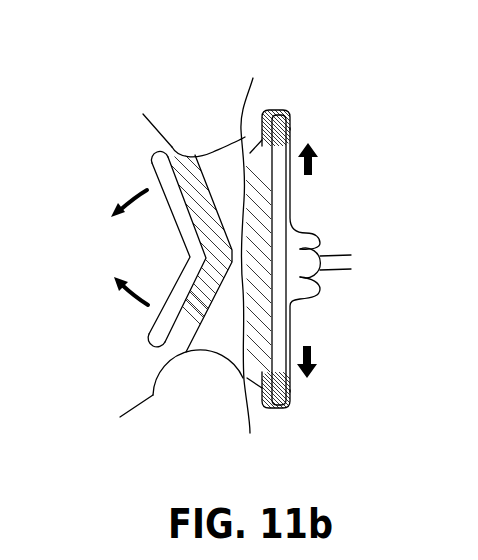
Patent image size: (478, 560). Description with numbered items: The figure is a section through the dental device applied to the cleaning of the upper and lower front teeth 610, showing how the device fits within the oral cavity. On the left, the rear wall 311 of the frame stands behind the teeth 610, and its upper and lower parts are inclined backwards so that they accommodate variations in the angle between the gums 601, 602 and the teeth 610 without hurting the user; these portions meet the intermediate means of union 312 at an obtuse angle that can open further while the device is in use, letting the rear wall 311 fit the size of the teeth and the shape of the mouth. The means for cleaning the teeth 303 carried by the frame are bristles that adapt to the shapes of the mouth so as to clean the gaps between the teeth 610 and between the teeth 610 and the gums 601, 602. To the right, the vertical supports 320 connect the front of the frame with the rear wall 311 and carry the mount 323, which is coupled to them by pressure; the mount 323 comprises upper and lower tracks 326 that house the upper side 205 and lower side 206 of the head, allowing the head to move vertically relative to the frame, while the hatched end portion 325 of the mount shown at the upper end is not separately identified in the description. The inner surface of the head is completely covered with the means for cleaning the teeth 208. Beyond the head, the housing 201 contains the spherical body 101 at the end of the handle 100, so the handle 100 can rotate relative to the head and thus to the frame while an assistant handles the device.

The handle 100 is at (351, 258).
The spherical body 101 is at (320, 272).
The housing 201 is at (308, 226).
The upper side of the head 205 is at (291, 133).
The lower side of the head 206 is at (290, 378).
The means for cleaning the teeth 208 is at (250, 77).
The means for cleaning the teeth 303 is at (172, 218).
The rear wall 311 is at (148, 168).
The intermediate means of union 312 is at (150, 304).
The vertical supports 320 is at (268, 108).
The mount 323 is at (291, 111).
The upper end block 325 is at (287, 127).
The upper and lower tracks 326 is at (285, 402).
The gums 601 is at (143, 115).
The gums 602 is at (120, 414).
The teeth 610 is at (212, 150).